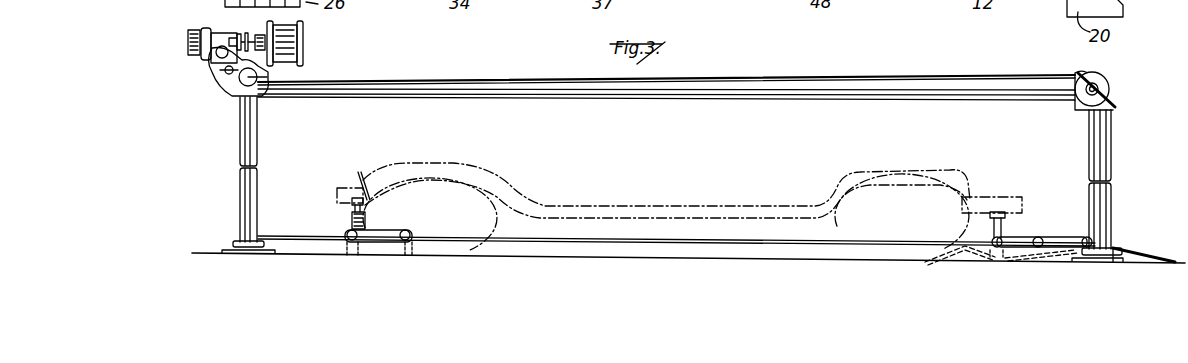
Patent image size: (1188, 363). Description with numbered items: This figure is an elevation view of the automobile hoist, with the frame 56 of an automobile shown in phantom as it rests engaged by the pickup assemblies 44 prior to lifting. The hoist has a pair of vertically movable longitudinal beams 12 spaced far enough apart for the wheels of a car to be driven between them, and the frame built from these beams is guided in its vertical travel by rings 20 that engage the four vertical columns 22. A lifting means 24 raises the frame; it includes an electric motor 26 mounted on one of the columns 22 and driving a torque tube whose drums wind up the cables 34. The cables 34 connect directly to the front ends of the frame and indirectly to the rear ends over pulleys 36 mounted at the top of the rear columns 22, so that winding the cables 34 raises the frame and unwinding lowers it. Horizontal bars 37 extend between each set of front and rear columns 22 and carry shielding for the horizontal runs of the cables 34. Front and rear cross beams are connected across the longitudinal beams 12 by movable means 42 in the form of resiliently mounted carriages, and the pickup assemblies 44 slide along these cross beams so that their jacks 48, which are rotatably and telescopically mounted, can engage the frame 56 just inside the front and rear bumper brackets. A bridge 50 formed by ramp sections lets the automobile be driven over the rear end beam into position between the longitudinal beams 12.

The longitudinal beams 12 is at (788, 249).
The rings 20 is at (237, 242).
The vertical columns 22 is at (250, 123).
The lifting means 24 is at (207, 86).
The electric motor 26 is at (300, 58).
The cables 34 is at (693, 81).
The pulleys 36 is at (1097, 78).
The horizontal bars 37 is at (897, 96).
The movable means 42 is at (405, 233).
The pickup assemblies 44 is at (348, 222).
The jacks 48 is at (358, 173).
The bridge 50 is at (1161, 254).
The frame of an automobile 56 is at (693, 213).